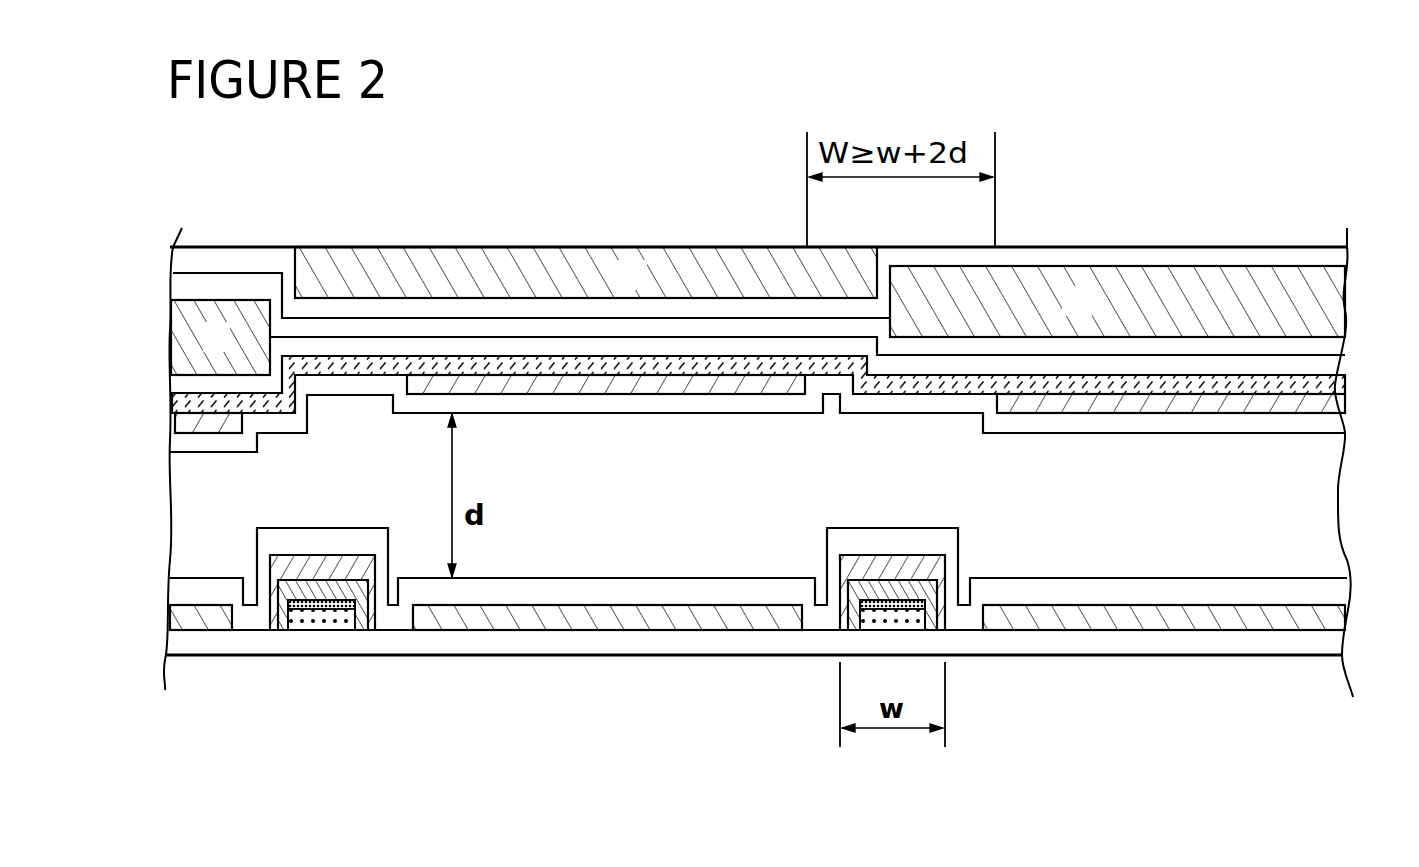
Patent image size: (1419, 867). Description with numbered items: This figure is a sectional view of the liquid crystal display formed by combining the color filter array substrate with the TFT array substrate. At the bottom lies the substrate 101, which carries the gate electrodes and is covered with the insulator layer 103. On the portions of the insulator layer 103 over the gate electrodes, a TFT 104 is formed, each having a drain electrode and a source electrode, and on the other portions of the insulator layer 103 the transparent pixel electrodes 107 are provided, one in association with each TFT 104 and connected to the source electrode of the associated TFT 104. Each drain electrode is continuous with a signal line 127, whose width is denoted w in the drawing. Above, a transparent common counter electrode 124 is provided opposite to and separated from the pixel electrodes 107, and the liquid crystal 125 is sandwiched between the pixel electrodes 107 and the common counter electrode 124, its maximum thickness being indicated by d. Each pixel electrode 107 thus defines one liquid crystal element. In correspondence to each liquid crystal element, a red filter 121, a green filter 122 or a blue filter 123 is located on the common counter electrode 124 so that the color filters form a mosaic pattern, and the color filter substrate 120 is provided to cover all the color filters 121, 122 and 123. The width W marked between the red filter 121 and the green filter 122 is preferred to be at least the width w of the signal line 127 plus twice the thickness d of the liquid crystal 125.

The color filter substrate 120 is at (346, 170).
The red filter 121 is at (432, 268).
The green filter 122 is at (1035, 290).
The blue filter 123 is at (208, 312).
The common counter electrode 124 is at (565, 387).
The liquid crystal 125 is at (1086, 494).
The signal line 127 is at (288, 563).
The TFT 104 is at (306, 662).
The pixel electrode 107 is at (462, 631).
The insulator layer 103 is at (992, 642).
The substrate 101 is at (373, 748).